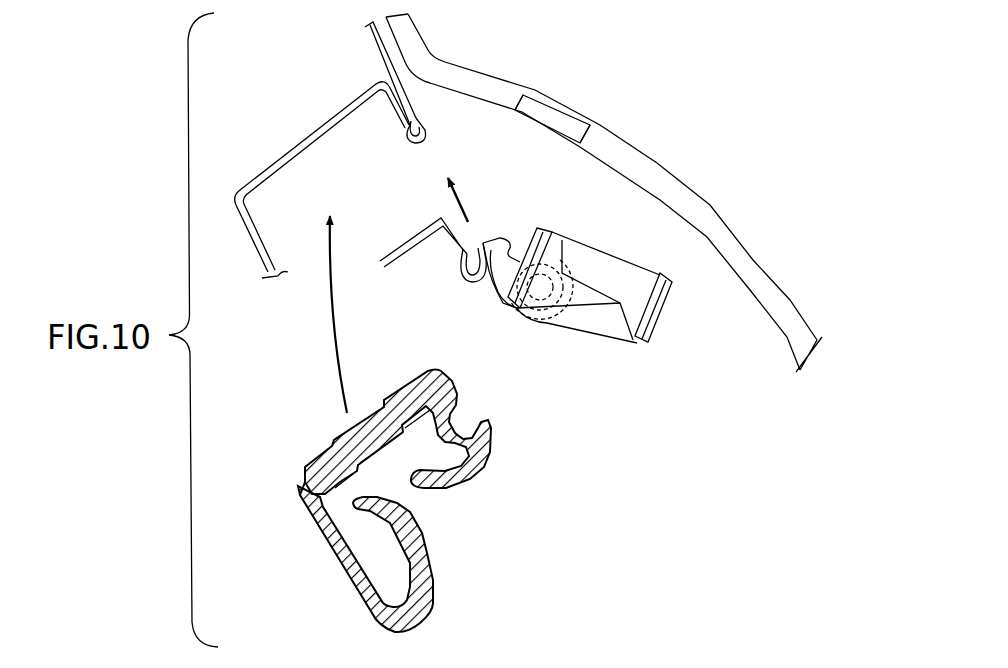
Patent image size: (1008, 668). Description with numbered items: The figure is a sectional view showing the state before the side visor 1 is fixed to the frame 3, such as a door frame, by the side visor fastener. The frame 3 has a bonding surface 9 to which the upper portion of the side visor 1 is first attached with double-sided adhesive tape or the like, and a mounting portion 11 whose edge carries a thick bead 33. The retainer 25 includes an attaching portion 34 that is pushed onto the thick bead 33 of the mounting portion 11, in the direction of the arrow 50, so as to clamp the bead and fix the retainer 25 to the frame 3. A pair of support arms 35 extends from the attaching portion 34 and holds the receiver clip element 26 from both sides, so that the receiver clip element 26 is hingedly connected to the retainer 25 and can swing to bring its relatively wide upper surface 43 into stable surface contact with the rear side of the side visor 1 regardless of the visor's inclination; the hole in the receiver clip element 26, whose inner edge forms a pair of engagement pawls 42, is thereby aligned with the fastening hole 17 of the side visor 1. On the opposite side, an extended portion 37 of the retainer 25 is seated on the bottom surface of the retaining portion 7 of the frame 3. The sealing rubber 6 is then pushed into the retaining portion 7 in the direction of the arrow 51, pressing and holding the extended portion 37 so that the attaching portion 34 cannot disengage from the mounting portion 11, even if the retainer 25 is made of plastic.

The side visor 1 is at (662, 162).
The frame 3 is at (297, 140).
The sealing rubber 6 is at (300, 477).
The retaining portion 7 is at (336, 181).
The bonding surface 9 is at (393, 49).
The mounting portion 11 is at (426, 112).
The fastening hole 17 is at (558, 110).
The retainer 25 is at (459, 283).
The receiver clip element 26 is at (640, 348).
The thick bead 33 is at (413, 146).
The attaching portion 34 is at (477, 286).
The support arms 35 is at (595, 293).
The extended portion 37 is at (396, 268).
The engagement pawls 42 is at (623, 277).
The upper surface 43 is at (664, 277).
The arrow 50 is at (456, 197).
The arrow 51 is at (330, 334).